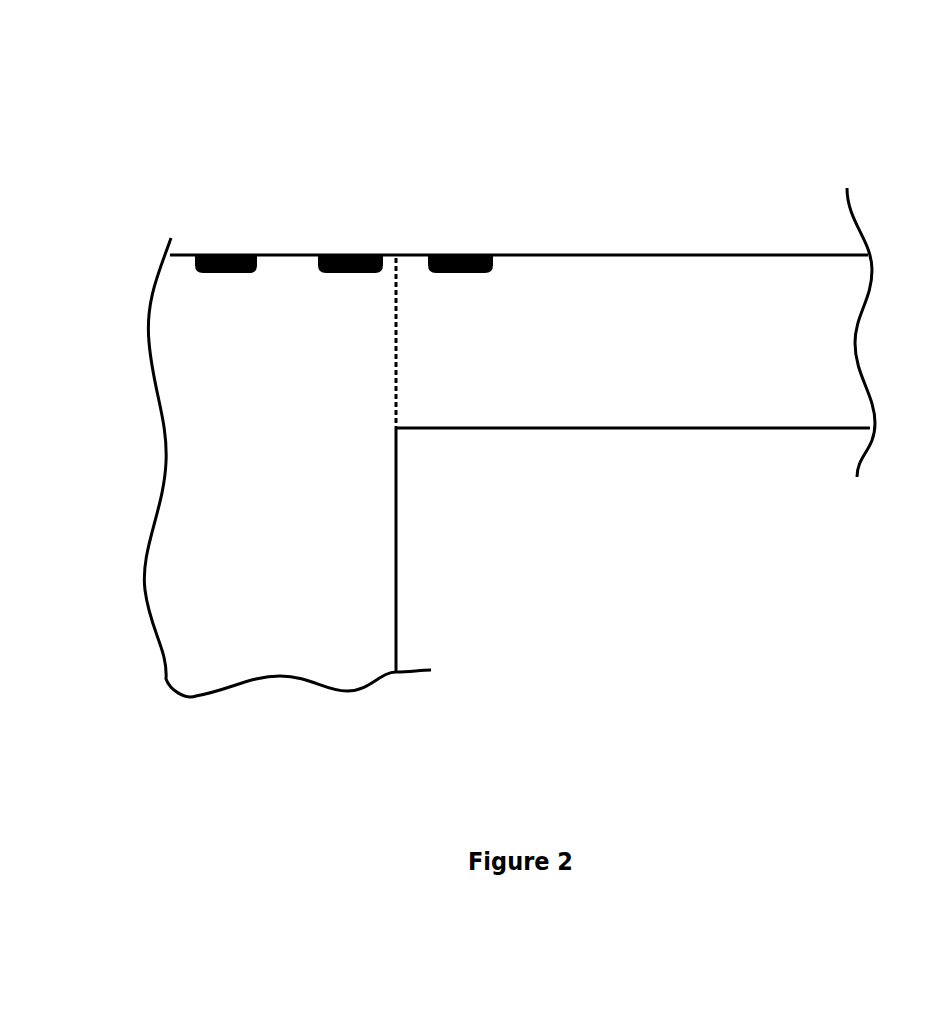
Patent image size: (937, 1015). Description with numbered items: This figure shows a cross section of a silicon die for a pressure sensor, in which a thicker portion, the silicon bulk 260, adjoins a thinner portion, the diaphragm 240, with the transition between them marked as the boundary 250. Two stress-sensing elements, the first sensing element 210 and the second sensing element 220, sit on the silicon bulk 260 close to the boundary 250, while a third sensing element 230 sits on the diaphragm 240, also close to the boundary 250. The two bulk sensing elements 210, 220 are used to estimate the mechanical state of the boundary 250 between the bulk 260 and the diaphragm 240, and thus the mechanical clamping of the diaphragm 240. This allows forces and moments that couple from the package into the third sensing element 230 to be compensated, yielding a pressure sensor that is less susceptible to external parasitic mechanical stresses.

The sensing element 1 210 is at (213, 232).
The sensing element 2 220 is at (338, 228).
The sensing element 3 230 is at (460, 228).
The diaphragm 240 is at (522, 332).
The boundary between silicon bulk and diaphragm 250 is at (402, 348).
The silicon bulk 260 is at (287, 467).